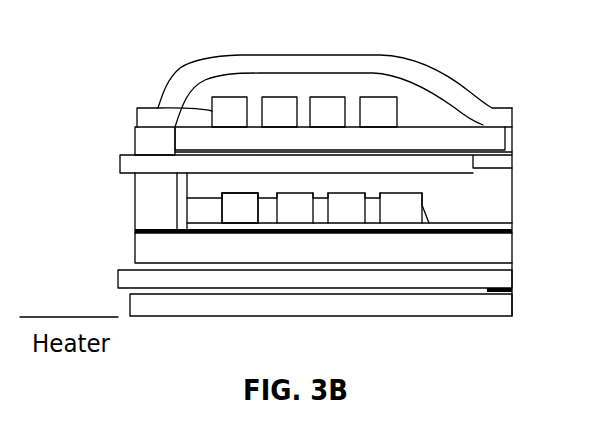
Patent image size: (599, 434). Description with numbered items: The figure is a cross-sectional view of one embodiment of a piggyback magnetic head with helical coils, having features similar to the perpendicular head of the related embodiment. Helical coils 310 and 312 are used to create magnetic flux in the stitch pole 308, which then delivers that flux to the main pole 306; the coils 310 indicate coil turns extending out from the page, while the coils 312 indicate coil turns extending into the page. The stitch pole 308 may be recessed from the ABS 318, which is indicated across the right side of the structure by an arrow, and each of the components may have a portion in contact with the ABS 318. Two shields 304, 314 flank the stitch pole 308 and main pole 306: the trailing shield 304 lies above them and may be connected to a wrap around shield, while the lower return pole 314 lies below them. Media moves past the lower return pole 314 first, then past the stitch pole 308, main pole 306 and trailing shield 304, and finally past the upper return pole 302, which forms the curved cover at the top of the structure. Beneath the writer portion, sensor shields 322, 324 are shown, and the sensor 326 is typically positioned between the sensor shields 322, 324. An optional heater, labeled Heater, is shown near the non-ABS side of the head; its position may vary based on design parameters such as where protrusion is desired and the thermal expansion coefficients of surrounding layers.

The upper return pole 302 is at (450, 82).
The trailing shield 304 is at (513, 143).
The main pole 306 is at (513, 154).
The stitch pole 308 is at (467, 173).
The helical coils extending out from the page 310 is at (158, 108).
The helical coils extending into the page 312 is at (222, 193).
The lower return pole 314 is at (358, 253).
The ABS 318 is at (521, 237).
The sensor shield 322 is at (118, 276).
The sensor shield 324 is at (130, 303).
The sensor 326 is at (512, 289).